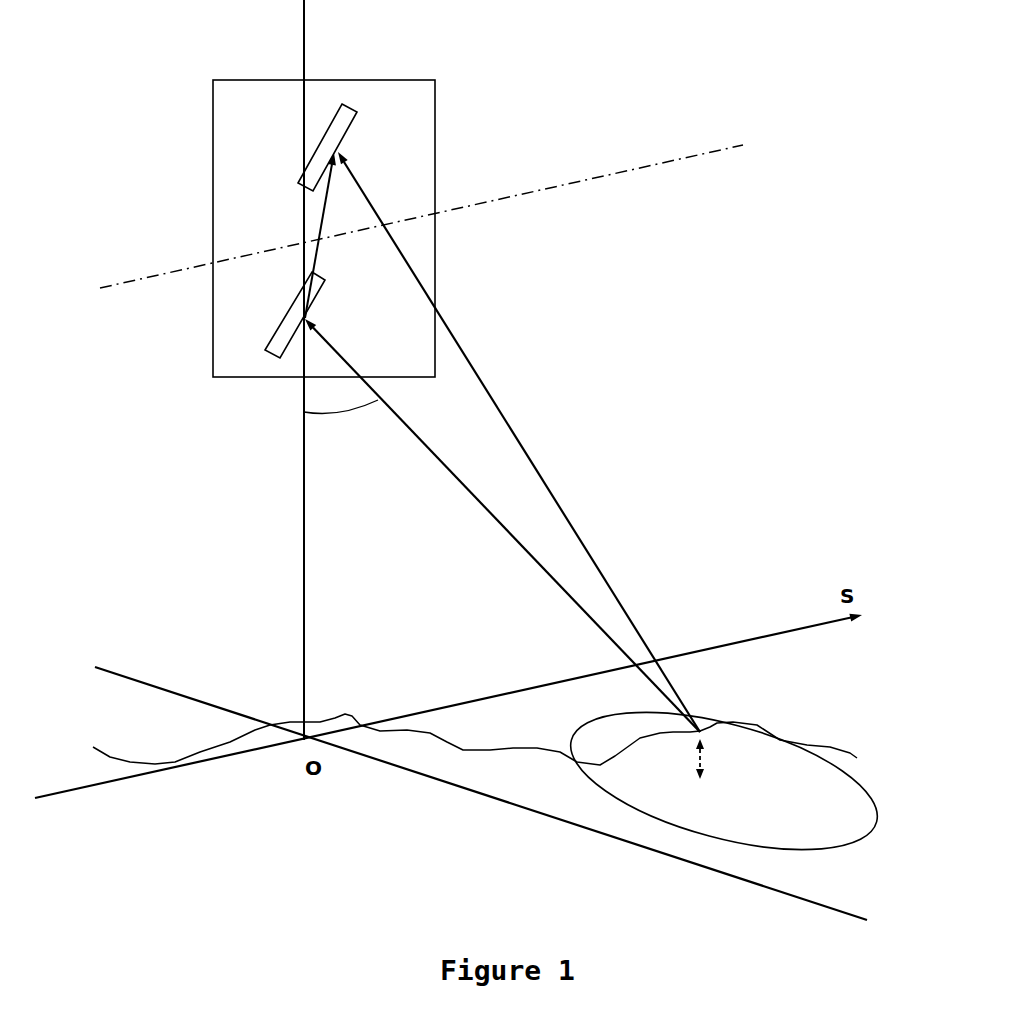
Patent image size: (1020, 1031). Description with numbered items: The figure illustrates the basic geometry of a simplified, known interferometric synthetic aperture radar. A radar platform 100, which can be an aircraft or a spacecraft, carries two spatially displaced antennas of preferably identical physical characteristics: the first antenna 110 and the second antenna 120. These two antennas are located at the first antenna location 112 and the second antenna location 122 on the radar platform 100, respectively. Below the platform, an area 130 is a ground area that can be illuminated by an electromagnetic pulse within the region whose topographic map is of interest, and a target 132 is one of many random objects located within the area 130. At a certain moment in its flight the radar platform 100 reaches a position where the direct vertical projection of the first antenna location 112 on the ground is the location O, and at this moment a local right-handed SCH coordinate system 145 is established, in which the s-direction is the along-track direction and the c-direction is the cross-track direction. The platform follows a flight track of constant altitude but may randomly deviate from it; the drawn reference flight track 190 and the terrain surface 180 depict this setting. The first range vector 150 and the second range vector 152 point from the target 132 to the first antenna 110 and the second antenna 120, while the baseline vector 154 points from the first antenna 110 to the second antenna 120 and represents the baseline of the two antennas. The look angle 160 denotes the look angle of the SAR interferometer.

The radar platform 100 is at (375, 80).
The antenna No. 1 110 is at (277, 353).
The location A1 112 is at (305, 318).
The antenna No. 2 120 is at (358, 115).
The location A2 122 is at (347, 150).
The area 130 is at (862, 828).
The target 132 is at (705, 722).
The local right-handed SCH coordinate system 145 is at (303, 632).
The range vector r_T1 150 is at (475, 498).
The range vector r_T2 152 is at (548, 485).
The baseline vector r21 154 is at (322, 218).
The look angle theta 160 is at (327, 413).
The terrain surface 180 is at (345, 715).
The reference flight track 190 is at (615, 175).